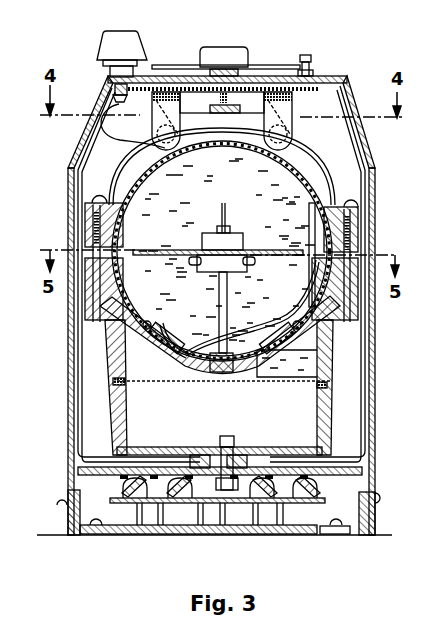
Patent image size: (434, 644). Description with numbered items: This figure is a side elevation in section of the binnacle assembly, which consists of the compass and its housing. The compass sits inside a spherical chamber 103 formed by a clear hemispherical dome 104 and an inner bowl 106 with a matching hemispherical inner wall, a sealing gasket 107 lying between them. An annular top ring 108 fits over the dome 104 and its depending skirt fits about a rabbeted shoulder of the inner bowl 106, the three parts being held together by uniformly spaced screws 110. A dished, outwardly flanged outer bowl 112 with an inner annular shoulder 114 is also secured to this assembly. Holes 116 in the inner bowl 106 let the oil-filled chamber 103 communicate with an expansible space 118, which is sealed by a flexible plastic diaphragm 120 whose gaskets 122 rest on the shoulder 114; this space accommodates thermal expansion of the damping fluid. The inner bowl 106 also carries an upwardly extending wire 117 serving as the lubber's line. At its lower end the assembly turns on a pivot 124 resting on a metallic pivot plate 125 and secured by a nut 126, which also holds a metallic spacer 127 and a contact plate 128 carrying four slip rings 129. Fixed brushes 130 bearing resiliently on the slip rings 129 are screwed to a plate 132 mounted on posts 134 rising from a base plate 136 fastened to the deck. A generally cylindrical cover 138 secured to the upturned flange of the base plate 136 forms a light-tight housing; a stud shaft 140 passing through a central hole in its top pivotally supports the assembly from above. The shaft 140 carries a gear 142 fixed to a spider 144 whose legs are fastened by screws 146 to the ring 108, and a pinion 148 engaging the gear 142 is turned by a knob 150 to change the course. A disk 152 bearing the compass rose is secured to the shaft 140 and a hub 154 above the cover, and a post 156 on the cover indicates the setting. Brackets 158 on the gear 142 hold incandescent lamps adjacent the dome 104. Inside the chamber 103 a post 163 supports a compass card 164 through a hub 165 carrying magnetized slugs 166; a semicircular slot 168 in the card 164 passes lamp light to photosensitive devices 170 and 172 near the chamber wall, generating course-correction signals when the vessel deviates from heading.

The spherical chamber 103 is at (227, 250).
The hemispherical dome 104 is at (277, 151).
The inner bowl 106 is at (130, 316).
The sealing gasket 107 is at (117, 270).
The annular top ring 108 is at (85, 213).
The screws 110 is at (120, 290).
The outer bowl 112 is at (112, 426).
The inner annular shoulder 114 is at (126, 388).
The holes 116 is at (184, 360).
The wire 117 is at (309, 210).
The space 118 is at (282, 365).
The diaphragm 120 is at (207, 374).
The gaskets 122 is at (315, 384).
The pivot 124 is at (212, 440).
The pivot plate 125 is at (207, 503).
The nut 126 is at (222, 503).
The metallic spacer 127 is at (247, 448).
The contact plate 128 is at (364, 472).
The slip rings 129 is at (318, 492).
The brushes 130 is at (139, 503).
The plate 132 is at (160, 526).
The posts 134 is at (147, 519).
The base plate 136 is at (227, 534).
The cover 138 is at (331, 80).
The stud shaft 140 is at (228, 80).
The gear 142 is at (305, 90).
The spider 144 is at (311, 140).
The screws 146 is at (352, 199).
The pinion 148 is at (125, 96).
The knob 150 is at (117, 40).
The disk 152 is at (166, 63).
The hub 154 is at (215, 44).
The post 156 is at (305, 57).
The brackets 158 is at (178, 122).
The post 163 is at (218, 290).
The compass card 164 is at (143, 250).
The hub 165 is at (234, 233).
The slugs 166 is at (252, 265).
The semicircular slot 168 is at (278, 254).
The photosensitive device 170 is at (168, 329).
The photosensitive device 172 is at (283, 308).